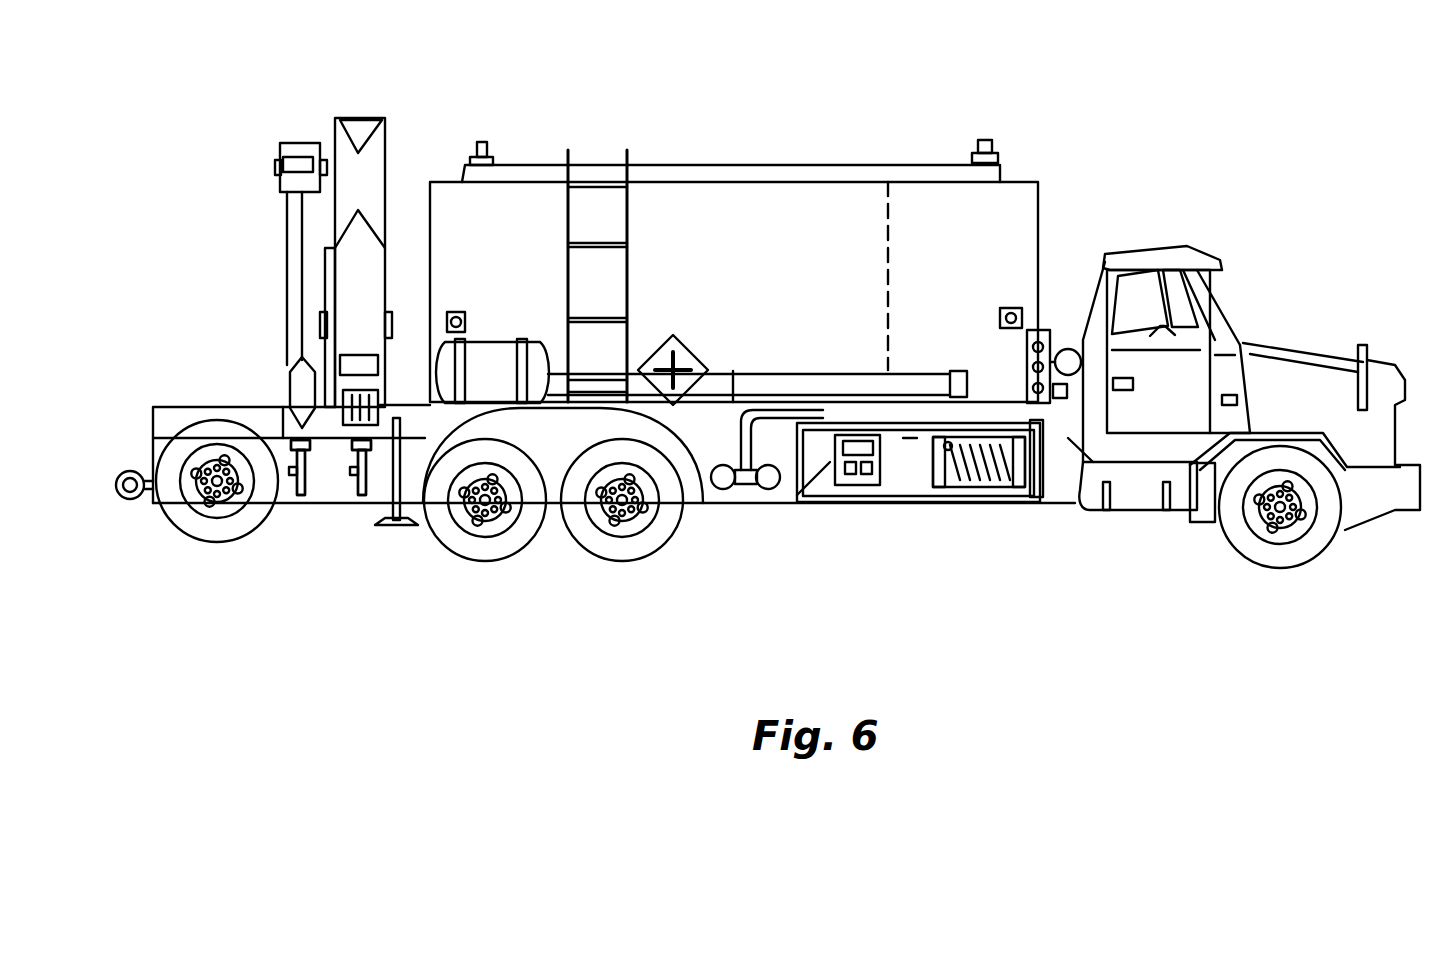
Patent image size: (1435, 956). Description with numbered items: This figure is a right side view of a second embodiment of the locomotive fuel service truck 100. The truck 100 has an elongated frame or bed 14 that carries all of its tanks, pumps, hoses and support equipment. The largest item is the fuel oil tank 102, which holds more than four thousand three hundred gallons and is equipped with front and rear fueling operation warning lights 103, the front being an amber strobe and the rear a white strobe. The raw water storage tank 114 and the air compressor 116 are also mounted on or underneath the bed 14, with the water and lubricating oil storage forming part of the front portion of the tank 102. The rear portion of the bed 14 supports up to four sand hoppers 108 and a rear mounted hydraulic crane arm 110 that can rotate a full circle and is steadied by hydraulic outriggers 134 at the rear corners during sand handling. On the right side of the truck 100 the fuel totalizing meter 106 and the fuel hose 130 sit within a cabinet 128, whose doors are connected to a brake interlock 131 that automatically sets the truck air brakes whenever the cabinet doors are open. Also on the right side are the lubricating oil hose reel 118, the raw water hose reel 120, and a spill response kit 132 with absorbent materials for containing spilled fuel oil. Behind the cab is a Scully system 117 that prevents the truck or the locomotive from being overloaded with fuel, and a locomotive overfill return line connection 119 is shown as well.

The frame or bed 14 is at (341, 458).
The locomotive fuel service truck 100 is at (1305, 293).
The fuel oil tank 102 is at (750, 233).
The fueling operation warning lights 103 is at (484, 140).
The fuel totalizing meter 106 is at (795, 500).
The sand hoppers 108 is at (213, 410).
The hydraulic crane arm 110 is at (385, 128).
The raw water storage tank 114 is at (1040, 237).
The air compressor 116 is at (1011, 318).
The Scully system 117 is at (1042, 330).
The lubricating oil hose reel 118 is at (292, 462).
The locomotive overfill return line connection 119 is at (762, 485).
The raw water hose reel 120 is at (356, 455).
The cabinet 128 is at (915, 500).
The fuel hose 130 is at (985, 470).
The brake interlock 131 is at (908, 445).
The spill response kit 132 is at (495, 358).
The hydraulic outriggers 134 is at (412, 528).